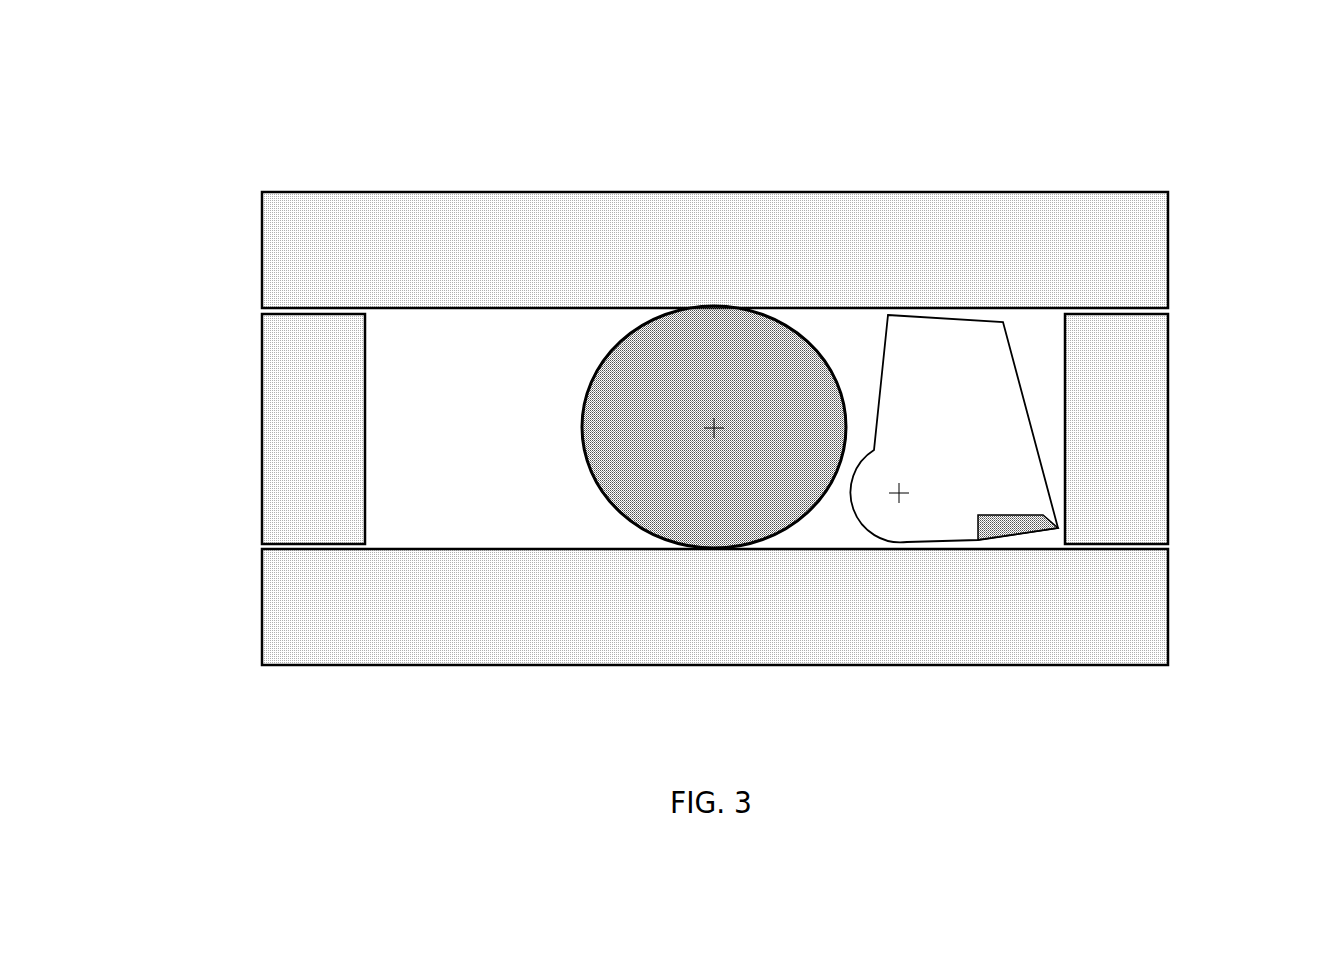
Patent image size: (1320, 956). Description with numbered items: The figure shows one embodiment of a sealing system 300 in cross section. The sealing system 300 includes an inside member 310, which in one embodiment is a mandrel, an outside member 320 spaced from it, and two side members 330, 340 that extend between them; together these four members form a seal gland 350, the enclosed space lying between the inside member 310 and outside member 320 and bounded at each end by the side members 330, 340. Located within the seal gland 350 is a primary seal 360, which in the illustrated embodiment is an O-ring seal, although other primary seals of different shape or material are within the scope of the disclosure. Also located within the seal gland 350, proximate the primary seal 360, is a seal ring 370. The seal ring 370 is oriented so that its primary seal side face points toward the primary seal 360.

The sealing system 300 is at (211, 121).
The inside member 310 is at (1168, 621).
The outside member 320 is at (1168, 243).
The side member 330 is at (262, 392).
The side member 340 is at (1168, 397).
The seal gland 350 is at (417, 350).
The primary seal 360 is at (728, 362).
The seal ring 370 is at (955, 360).